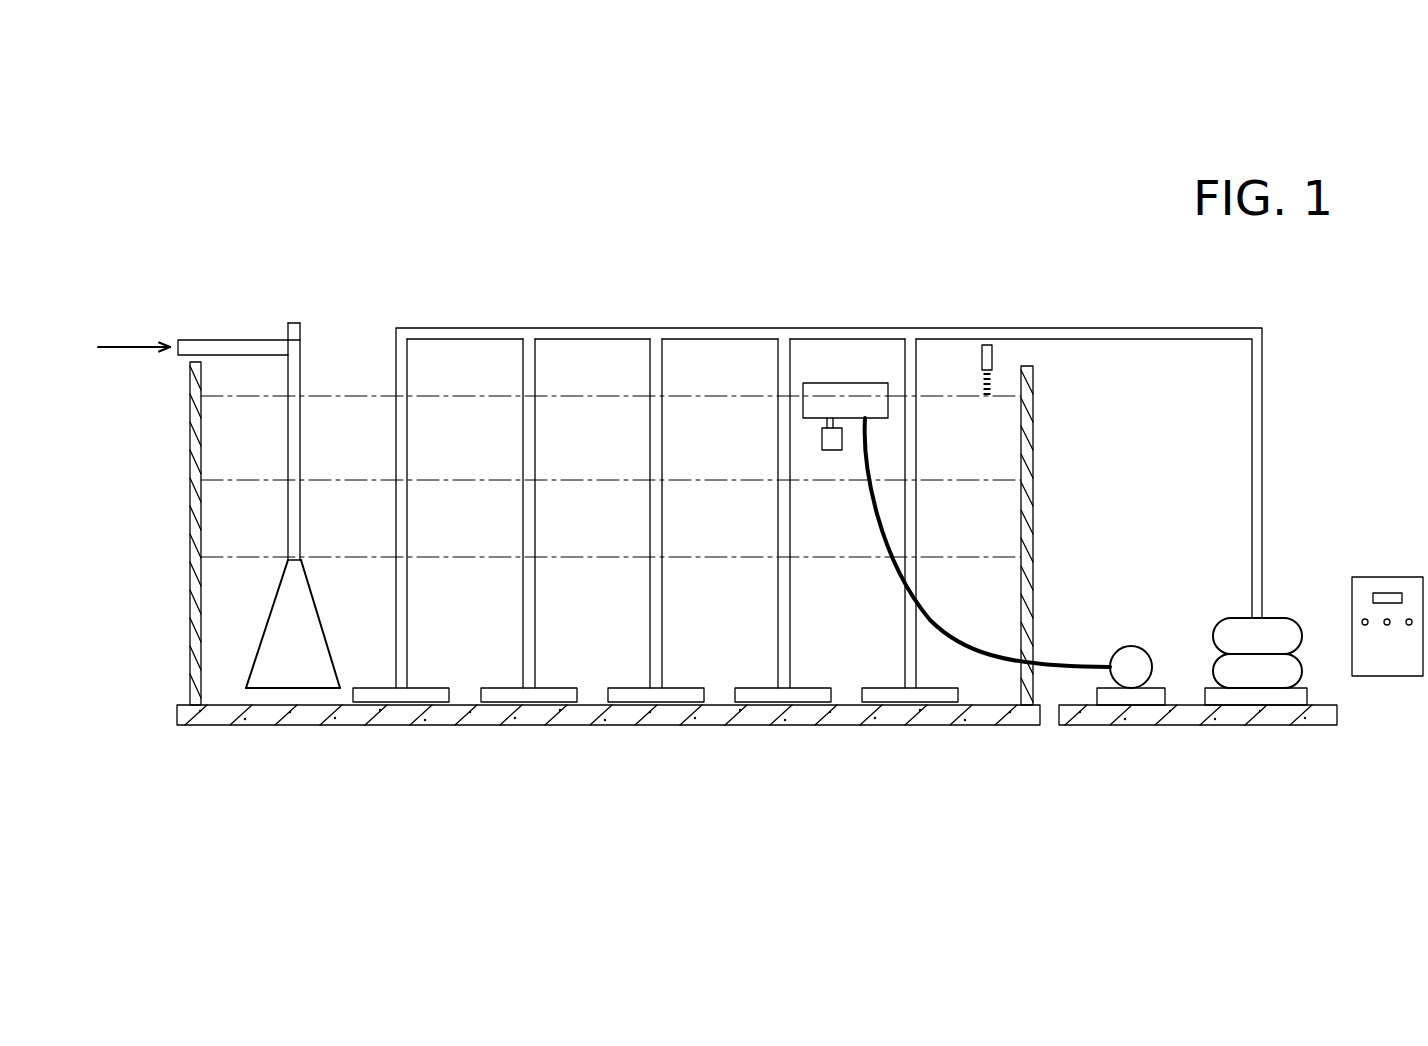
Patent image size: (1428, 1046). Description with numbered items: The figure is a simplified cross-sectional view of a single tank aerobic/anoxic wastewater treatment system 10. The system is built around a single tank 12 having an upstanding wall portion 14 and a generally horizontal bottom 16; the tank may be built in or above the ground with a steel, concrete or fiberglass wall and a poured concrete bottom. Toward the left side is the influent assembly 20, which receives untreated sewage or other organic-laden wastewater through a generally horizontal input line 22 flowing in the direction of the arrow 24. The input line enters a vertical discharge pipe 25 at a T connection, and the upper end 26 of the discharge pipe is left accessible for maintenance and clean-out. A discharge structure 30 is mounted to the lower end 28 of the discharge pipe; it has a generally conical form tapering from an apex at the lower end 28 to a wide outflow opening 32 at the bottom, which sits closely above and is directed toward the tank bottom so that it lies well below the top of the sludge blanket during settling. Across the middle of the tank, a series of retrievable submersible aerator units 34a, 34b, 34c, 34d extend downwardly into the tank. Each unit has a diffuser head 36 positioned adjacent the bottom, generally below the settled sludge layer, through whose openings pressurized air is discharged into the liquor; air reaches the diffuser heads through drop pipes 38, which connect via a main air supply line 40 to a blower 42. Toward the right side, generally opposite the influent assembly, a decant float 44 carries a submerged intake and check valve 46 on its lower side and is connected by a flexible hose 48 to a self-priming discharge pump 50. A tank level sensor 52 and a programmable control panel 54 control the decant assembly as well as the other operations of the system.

The wastewater treatment system 10 is at (1228, 300).
The tank 12 is at (1034, 453).
The upstanding wall portion 14 is at (1030, 522).
The bottom 16 is at (690, 728).
The influent assembly 20 is at (225, 322).
The input line 22 is at (258, 343).
The arrow 24 is at (130, 347).
The discharge pipe 25 is at (302, 452).
The upper end 26 is at (298, 324).
The lower end 28 is at (300, 558).
The discharge structure 30 is at (268, 637).
The outflow opening 32 is at (292, 690).
The submersible aerator unit 34a is at (410, 618).
The submersible aerator unit 34b is at (537, 618).
The submersible aerator unit 34c is at (664, 618).
The submersible aerator unit 34d is at (792, 618).
The diffuser head 36 is at (427, 688).
The drop pipe 38 is at (409, 536).
The main air supply line 40 is at (707, 330).
The blower 42 is at (1222, 625).
The decant float 44 is at (842, 383).
The submerged intake and check valve 46 is at (832, 452).
The flexible hose 48 is at (1070, 668).
The self-priming discharge pump 50 is at (1131, 648).
The tank level sensor 52 is at (993, 357).
The programmable control panel 54 is at (1384, 577).